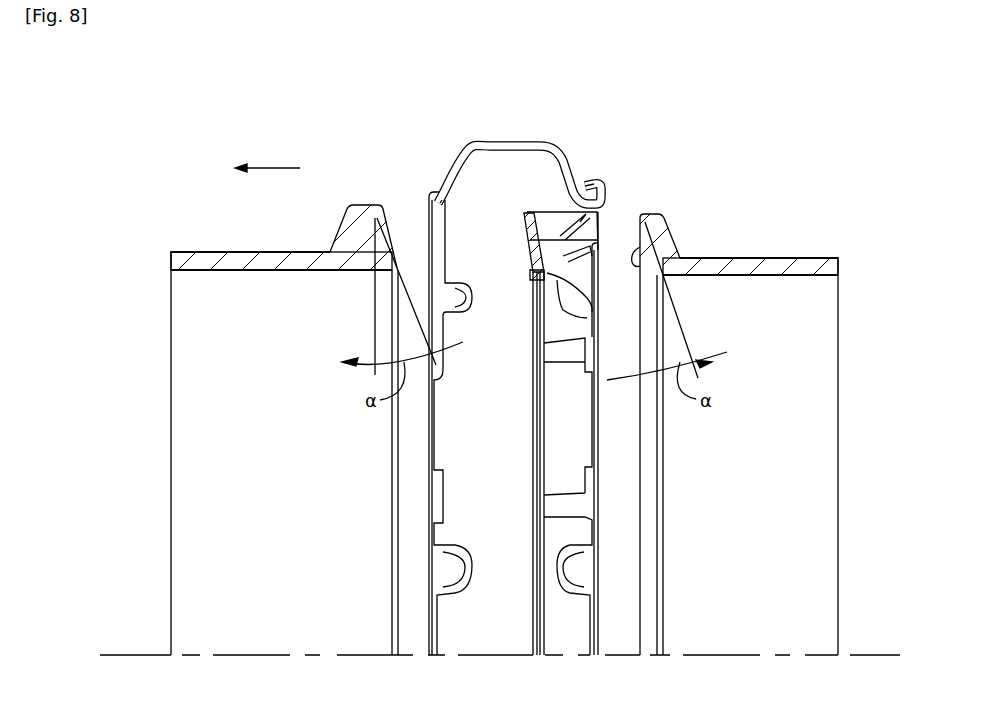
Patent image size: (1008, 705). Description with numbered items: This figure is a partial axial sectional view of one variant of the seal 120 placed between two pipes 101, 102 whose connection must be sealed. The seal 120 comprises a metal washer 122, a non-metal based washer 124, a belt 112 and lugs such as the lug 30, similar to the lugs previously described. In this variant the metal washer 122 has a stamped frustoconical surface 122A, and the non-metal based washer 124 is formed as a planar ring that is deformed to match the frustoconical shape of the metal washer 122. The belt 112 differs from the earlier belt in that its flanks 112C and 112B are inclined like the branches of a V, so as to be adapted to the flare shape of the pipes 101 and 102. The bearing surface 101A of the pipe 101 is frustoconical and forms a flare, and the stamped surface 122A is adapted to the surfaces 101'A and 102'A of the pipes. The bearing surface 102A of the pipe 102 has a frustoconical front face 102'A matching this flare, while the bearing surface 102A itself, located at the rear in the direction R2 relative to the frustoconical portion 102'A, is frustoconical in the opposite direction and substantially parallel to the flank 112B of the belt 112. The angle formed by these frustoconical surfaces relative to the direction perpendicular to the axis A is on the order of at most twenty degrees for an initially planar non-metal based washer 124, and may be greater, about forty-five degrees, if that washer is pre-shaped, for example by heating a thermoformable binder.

The pipe 101 is at (735, 408).
The bearing surface of the pipe 101A is at (672, 233).
The frustoconical surface of the pipe 101'A is at (690, 434).
The pipe 102 is at (303, 394).
The bearing surface of the pipe 102A is at (332, 232).
The front face 102'A is at (383, 254).
The belt 112 is at (552, 145).
The flank of the belt 112B is at (446, 172).
The flank of the belt 112C is at (576, 169).
The seal 120 is at (518, 385).
The metal washer 122 is at (563, 252).
The stamped frustoconical surface 122A is at (595, 295).
The non-metal based washer 124 is at (524, 222).
The lug 30 is at (552, 194).
The axis A is at (880, 652).
The direction R2 is at (267, 157).